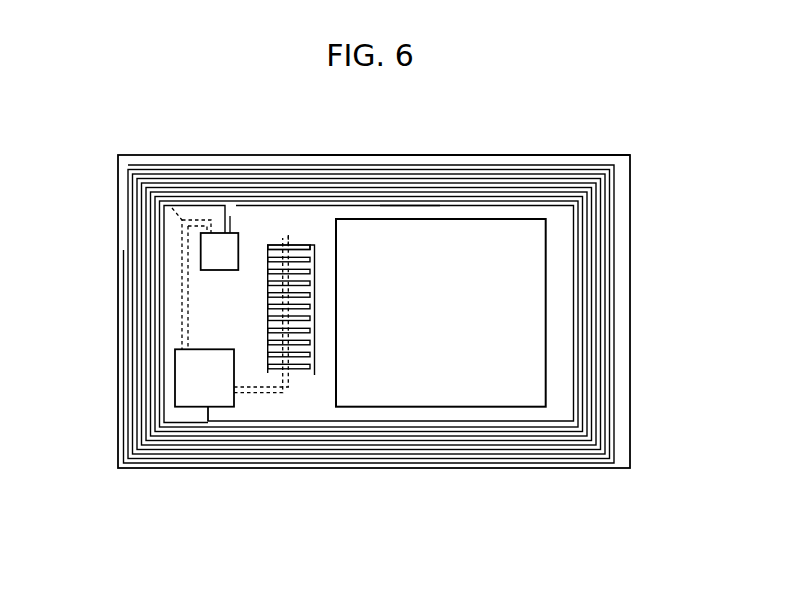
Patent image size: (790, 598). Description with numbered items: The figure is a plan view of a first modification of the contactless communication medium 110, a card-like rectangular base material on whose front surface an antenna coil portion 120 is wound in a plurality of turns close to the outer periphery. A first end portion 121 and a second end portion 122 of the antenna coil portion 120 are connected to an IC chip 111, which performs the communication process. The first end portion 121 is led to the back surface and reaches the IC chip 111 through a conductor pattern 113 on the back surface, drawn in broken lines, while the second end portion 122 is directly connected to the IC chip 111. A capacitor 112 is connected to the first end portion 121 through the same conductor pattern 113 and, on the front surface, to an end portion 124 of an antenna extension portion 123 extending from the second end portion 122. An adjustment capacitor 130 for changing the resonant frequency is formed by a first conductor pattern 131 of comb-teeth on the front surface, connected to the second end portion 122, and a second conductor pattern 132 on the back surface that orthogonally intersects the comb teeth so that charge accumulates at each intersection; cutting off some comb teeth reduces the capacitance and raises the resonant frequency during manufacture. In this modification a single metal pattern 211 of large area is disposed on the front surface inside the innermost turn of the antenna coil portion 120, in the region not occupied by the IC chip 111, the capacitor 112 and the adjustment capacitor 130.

The contactless communication medium 110 is at (485, 470).
The antenna coil portion 120 is at (492, 157).
The first end portion 121 is at (129, 165).
The second end portion 122 is at (230, 216).
The antenna extension portion 123 is at (412, 204).
The end portion 124 is at (202, 412).
The IC chip 111 is at (220, 265).
The capacitor 112 is at (180, 396).
The conductor pattern 113 is at (180, 296).
The adjustment capacitor 130 is at (304, 380).
The first conductor pattern 131 is at (298, 247).
The second conductor pattern 132 is at (288, 238).
The metal pattern 211 is at (537, 313).